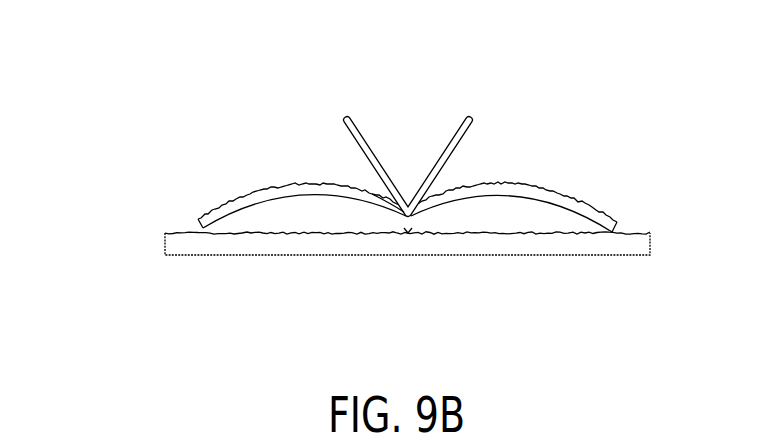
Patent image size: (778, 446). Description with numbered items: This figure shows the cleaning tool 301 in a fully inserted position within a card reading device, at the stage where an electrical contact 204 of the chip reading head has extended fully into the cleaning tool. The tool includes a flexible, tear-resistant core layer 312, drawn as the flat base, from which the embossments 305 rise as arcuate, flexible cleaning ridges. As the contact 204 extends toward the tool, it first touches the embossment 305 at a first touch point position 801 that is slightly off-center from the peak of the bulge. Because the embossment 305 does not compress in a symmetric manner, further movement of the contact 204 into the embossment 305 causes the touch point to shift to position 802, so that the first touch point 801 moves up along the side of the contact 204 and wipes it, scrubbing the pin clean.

The electrical contact 204 is at (342, 120).
The cleaning tool 301 is at (185, 193).
The embossment 305 is at (503, 182).
The core layer 312 is at (165, 247).
The first touch point position 801 is at (378, 207).
The touch point position 802 is at (408, 232).